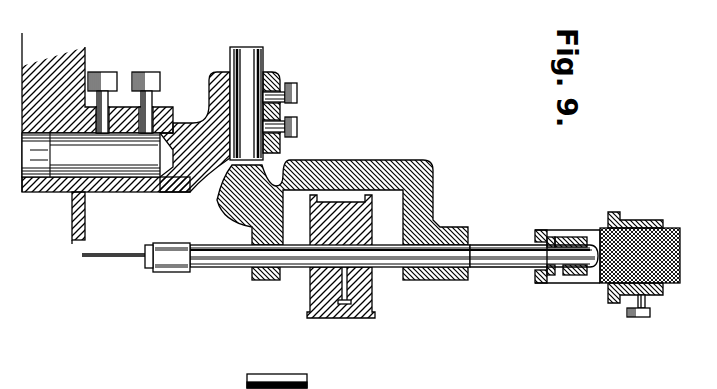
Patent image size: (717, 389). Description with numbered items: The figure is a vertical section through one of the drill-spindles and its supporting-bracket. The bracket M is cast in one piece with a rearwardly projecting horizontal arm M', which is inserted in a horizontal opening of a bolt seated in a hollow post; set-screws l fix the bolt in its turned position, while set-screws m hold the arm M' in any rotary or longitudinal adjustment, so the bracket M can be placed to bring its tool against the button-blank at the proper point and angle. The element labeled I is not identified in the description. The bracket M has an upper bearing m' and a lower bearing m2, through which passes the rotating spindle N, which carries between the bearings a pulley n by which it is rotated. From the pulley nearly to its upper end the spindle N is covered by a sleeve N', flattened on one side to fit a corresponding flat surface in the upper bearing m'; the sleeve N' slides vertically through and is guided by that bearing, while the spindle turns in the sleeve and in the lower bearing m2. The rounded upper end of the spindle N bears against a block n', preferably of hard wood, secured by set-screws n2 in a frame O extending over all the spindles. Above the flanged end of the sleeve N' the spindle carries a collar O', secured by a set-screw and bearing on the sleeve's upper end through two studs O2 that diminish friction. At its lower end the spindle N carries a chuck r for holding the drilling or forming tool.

The frame or standard I is at (193, 120).
The set-screws l is at (101, 71).
The horizontal arm M' is at (246, 81).
The set-screws m is at (292, 112).
The bracket M is at (342, 188).
The lower bearing m2 is at (263, 280).
The upper bearing m' is at (435, 287).
The pulley n is at (341, 262).
The rotating spindle N is at (330, 267).
The sleeve N' is at (534, 231).
The chuck r is at (168, 272).
The frame O is at (567, 269).
The studs O2 is at (554, 235).
The collar O' is at (571, 235).
The block n' is at (652, 257).
The set-screws n2 is at (640, 317).